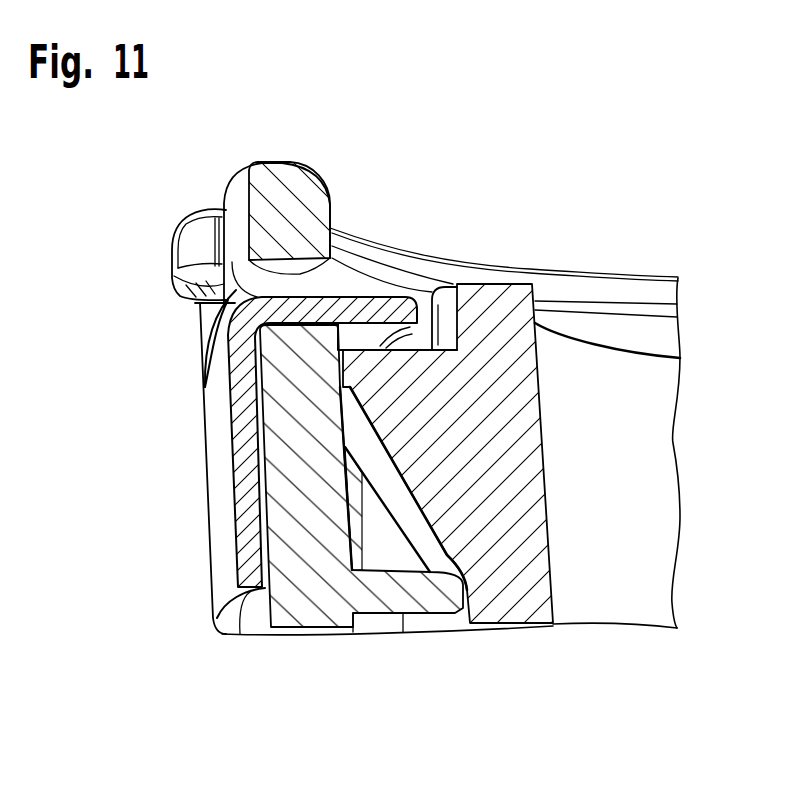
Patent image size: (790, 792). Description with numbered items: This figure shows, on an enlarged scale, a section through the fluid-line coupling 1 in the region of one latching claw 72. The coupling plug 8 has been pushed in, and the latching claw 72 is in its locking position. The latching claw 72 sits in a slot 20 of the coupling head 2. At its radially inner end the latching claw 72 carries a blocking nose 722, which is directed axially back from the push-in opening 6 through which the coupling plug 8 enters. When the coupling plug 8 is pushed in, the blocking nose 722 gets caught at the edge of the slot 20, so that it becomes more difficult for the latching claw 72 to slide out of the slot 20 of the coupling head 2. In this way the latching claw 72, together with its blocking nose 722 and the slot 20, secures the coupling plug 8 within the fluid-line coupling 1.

The fluid-line coupling 1 is at (648, 150).
The coupling head 2 is at (312, 578).
The push-in opening 6 is at (683, 258).
The coupling plug 8 is at (507, 572).
The slot 20 is at (196, 316).
The latching claw 72 is at (358, 295).
The blocking nose 722 is at (428, 306).